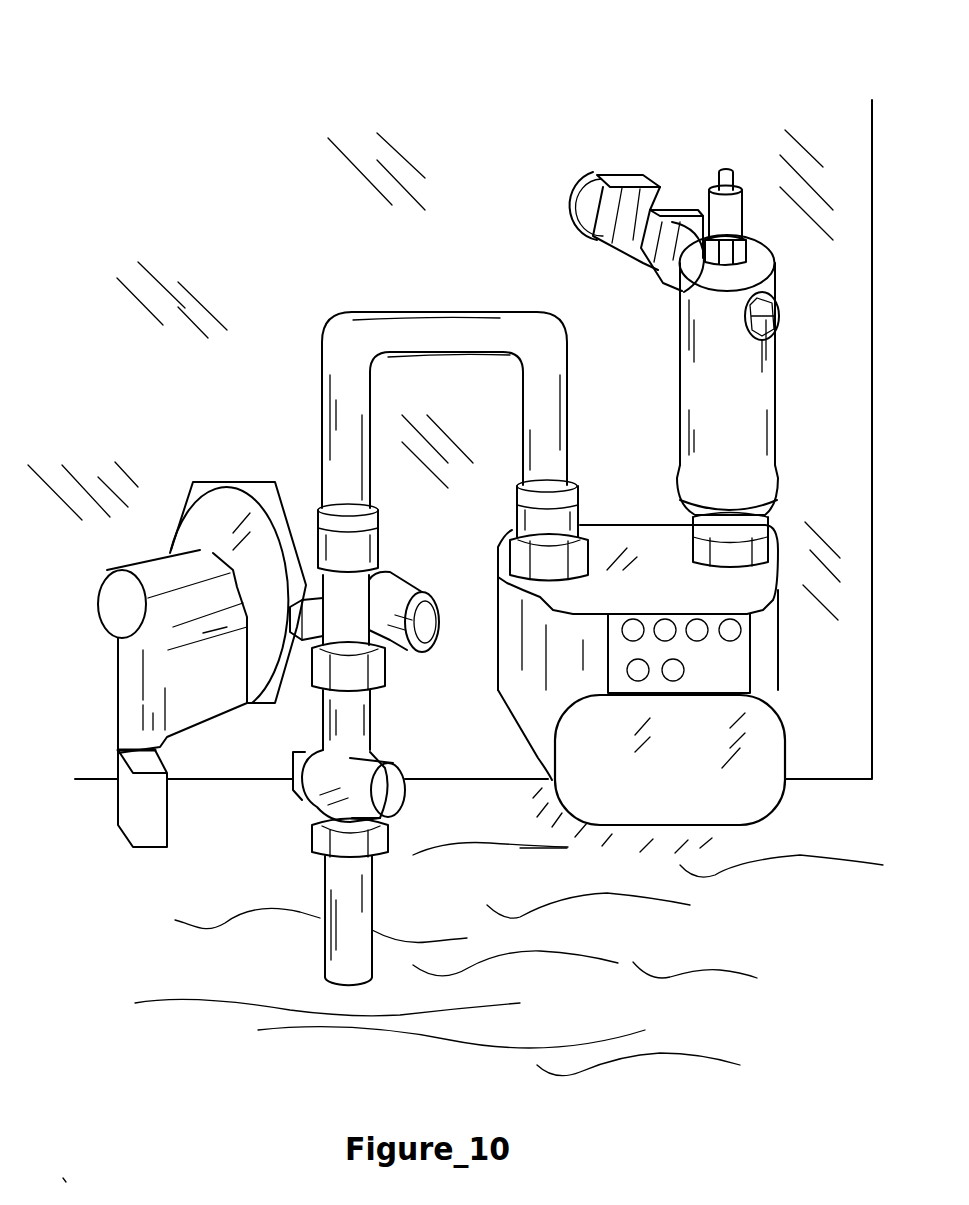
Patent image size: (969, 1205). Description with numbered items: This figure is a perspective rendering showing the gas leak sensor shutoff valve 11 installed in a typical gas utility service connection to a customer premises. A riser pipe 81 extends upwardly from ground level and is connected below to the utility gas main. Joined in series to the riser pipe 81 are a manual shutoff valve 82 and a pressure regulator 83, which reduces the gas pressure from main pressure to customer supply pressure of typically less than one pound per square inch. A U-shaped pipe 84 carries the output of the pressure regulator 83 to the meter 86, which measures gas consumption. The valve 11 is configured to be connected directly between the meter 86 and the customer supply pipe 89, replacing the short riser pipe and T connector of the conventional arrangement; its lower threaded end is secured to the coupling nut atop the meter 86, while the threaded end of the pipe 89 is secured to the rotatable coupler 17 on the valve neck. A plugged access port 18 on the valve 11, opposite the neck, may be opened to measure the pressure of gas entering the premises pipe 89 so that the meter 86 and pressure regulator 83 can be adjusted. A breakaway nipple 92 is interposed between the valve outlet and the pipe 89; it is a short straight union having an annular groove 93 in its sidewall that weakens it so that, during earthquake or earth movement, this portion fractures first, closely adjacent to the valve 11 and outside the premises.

The gas leak sensor valve 11 is at (717, 305).
The rotatable coupler 17 is at (633, 265).
The access port 18 is at (773, 338).
The riser pipe 81 is at (320, 882).
The manual shutoff valve 82 is at (372, 762).
The pressure regulator 83 is at (228, 482).
The U-shaped pipe 84 is at (378, 312).
The meter 86 is at (758, 777).
The pipe 89 is at (576, 205).
The breakaway nipple 92 is at (678, 166).
The annular groove 93 is at (625, 202).